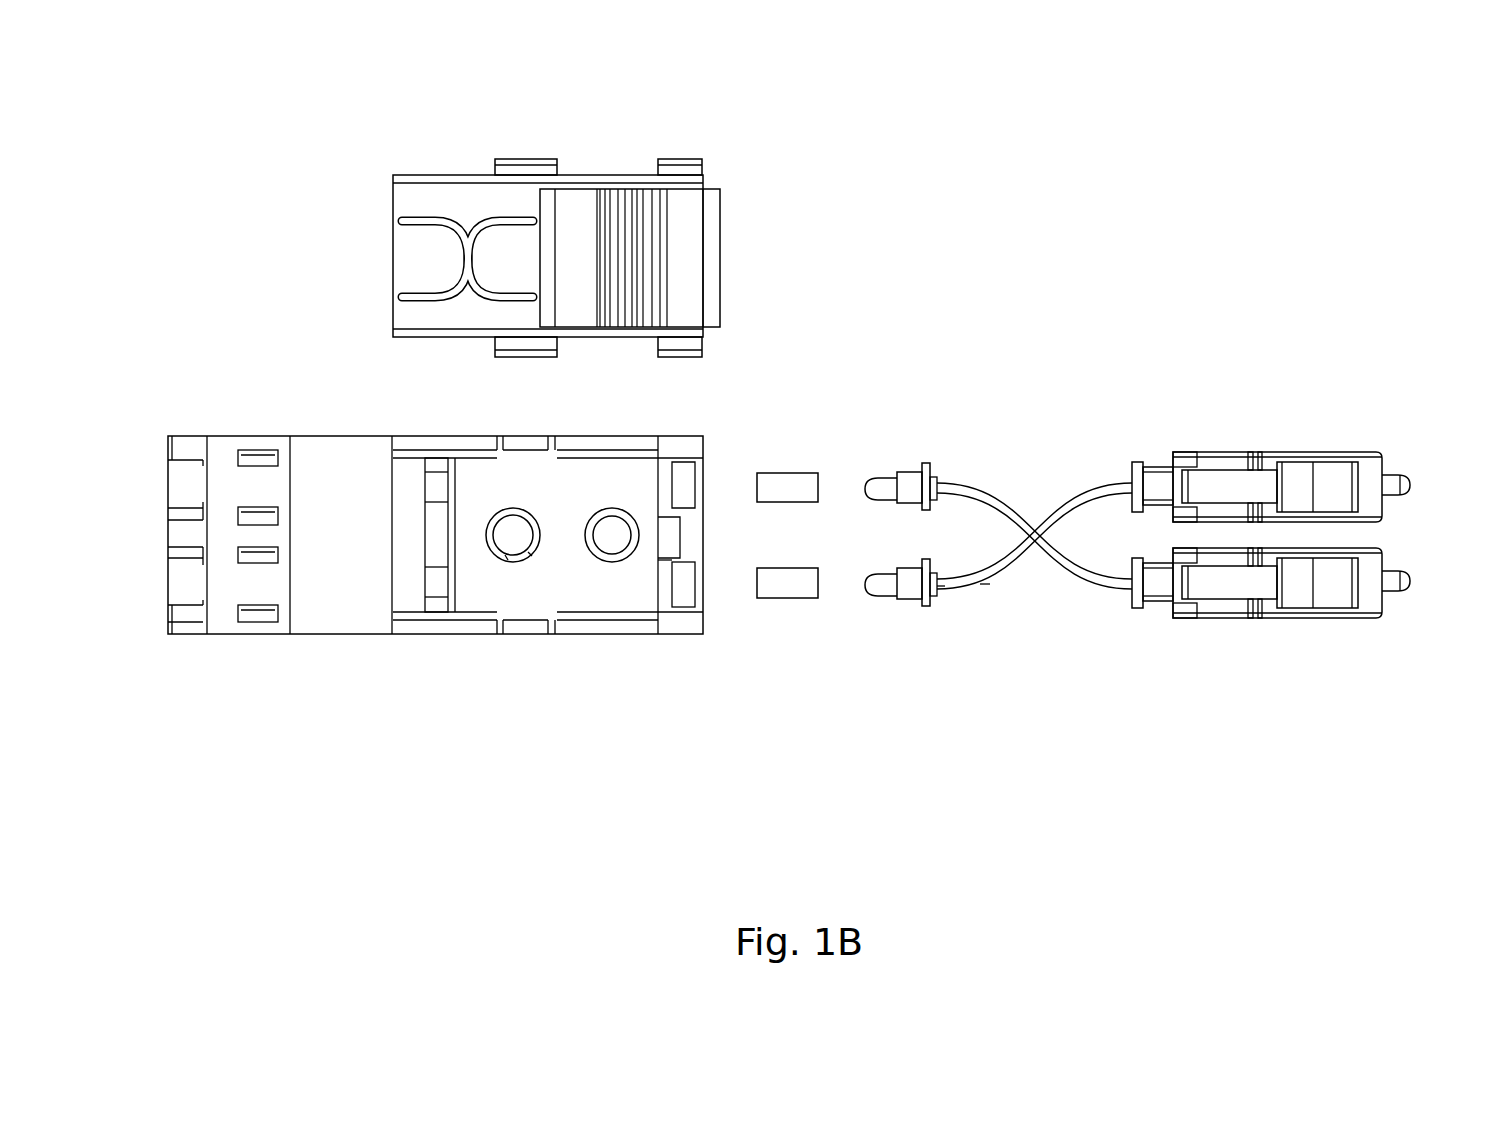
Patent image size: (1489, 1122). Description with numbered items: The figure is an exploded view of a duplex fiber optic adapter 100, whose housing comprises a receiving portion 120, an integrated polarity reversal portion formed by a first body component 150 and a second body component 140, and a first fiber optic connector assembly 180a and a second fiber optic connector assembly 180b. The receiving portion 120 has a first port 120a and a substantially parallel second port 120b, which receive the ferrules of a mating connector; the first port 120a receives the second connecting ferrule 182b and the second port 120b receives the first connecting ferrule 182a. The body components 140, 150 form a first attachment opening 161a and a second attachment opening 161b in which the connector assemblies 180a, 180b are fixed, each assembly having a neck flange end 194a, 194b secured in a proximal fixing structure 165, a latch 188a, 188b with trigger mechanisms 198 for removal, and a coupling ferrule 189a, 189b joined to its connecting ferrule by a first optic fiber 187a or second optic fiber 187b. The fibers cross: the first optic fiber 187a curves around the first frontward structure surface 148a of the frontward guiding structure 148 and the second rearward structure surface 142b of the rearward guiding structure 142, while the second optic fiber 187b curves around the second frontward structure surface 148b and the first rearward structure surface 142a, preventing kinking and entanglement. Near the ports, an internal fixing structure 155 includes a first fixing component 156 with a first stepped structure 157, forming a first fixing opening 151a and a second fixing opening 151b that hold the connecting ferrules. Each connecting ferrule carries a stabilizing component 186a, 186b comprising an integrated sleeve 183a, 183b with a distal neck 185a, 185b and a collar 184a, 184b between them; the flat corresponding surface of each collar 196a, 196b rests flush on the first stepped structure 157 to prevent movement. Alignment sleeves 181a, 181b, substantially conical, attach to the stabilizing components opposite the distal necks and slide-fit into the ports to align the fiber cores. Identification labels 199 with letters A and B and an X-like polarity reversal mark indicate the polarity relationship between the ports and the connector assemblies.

The duplex fiber optic adapter 100 is at (1340, 155).
The receiving portion 120 is at (330, 436).
The first port 120a is at (152, 605).
The second port 120b is at (152, 462).
The second body component 140 is at (453, 175).
The rearward guiding structure 142 is at (456, 500).
The first rearward structure surface 142a is at (497, 508).
The second rearward structure surface 142b is at (520, 508).
The frontward guiding structure 148 is at (716, 496).
The first frontward structure surface 148a is at (612, 562).
The second frontward structure surface 148b is at (616, 508).
The first body component 150 is at (668, 560).
The first fixing opening 151a is at (500, 562).
The second fixing opening 151b is at (532, 558).
The internal fixing structure 155 is at (268, 753).
The first fixing component 156 is at (465, 590).
The first stepped structure 157 is at (432, 525).
The first attachment opening 161a is at (710, 600).
The second attachment opening 161b is at (757, 600).
The proximal fixing structure 165 is at (688, 466).
The first fiber optic connector assembly 180a is at (1240, 620).
The second fiber optic connector assembly 180b is at (1356, 452).
The first alignment sleeve 181a is at (800, 472).
The second alignment sleeve 181b is at (770, 568).
The first connecting ferrule 182a is at (868, 476).
The second connecting ferrule 182b is at (868, 602).
The first integrated sleeve 183a is at (900, 470).
The second integrated sleeve 183b is at (900, 604).
The first collar 184a is at (926, 462).
The second collar 184b is at (925, 608).
The first distal neck 185a is at (948, 481).
The second distal neck 185b is at (942, 598).
The first stabilizing component 186a is at (1110, 329).
The second stabilizing component 186b is at (1027, 772).
The first optic fiber 187a is at (1030, 520).
The second optic fiber 187b is at (1032, 553).
The latch 188a is at (1183, 566).
The latch 188b is at (1188, 503).
The first coupling ferrule 189a is at (1405, 596).
The second coupling ferrule 189b is at (1405, 476).
The first neck flange end 194a is at (1138, 610).
The second neck flange end 194b is at (1138, 462).
The corresponding surface of the collar 196a is at (985, 586).
The corresponding surface of the collar 196b is at (938, 594).
The trigger mechanism 198 is at (533, 192).
The identification labels 199 is at (570, 300).